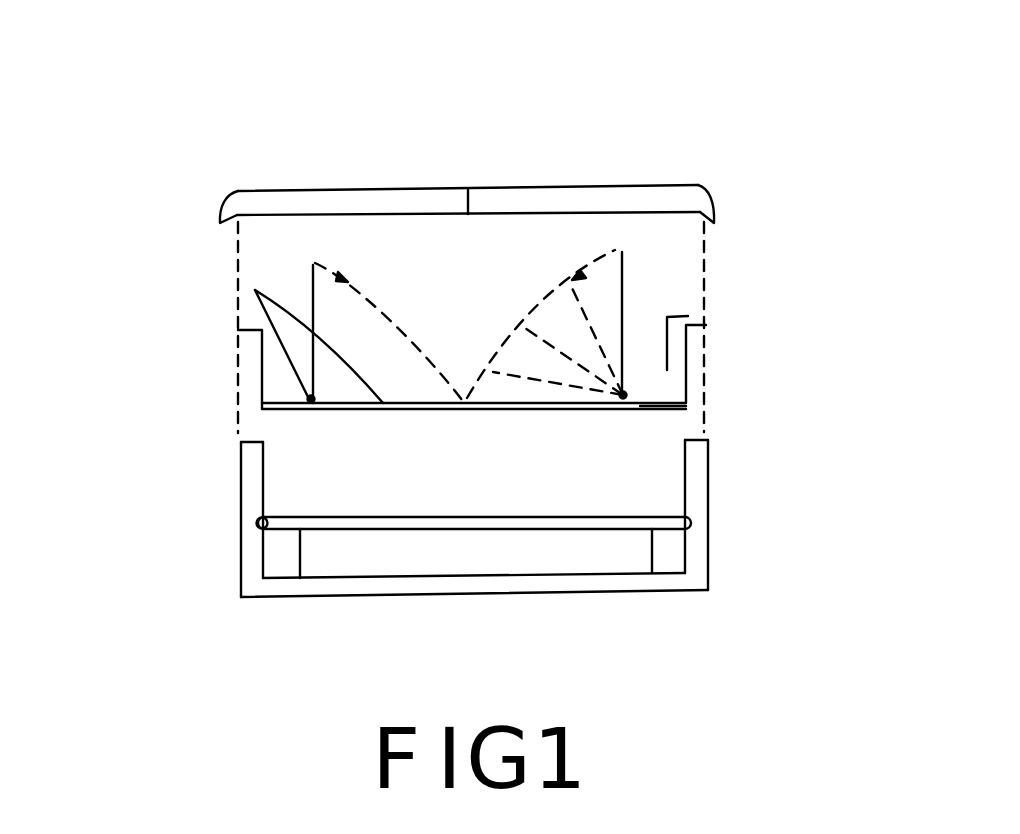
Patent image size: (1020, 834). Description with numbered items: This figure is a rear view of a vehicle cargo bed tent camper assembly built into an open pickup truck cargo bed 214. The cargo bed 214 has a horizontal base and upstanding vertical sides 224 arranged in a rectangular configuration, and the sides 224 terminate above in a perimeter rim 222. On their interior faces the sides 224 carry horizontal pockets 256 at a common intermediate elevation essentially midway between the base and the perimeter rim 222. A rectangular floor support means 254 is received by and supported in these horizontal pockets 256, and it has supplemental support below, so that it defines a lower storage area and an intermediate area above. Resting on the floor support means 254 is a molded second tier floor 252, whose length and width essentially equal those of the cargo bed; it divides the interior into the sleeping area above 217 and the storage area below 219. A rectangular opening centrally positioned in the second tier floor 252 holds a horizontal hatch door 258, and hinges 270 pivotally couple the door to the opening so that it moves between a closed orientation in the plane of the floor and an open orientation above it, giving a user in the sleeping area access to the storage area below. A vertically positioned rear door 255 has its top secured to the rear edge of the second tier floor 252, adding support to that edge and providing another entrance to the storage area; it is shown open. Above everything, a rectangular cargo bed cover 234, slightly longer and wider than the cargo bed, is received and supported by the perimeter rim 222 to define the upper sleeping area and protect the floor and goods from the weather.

The cargo bed cover 234 is at (540, 178).
The hatch door 258 is at (632, 330).
The hinges 270 is at (255, 290).
The floor support means 254 is at (348, 508).
The perimeter rim 222 is at (241, 443).
The horizontal pockets 256 is at (258, 525).
The storage area below 219 is at (333, 560).
The open pickup truck cargo bed 214 is at (553, 548).
The sleeping area above 217 is at (688, 316).
The second tier floor 252 is at (693, 370).
The rear door 255 is at (660, 412).
The vertical sides 224 is at (715, 480).